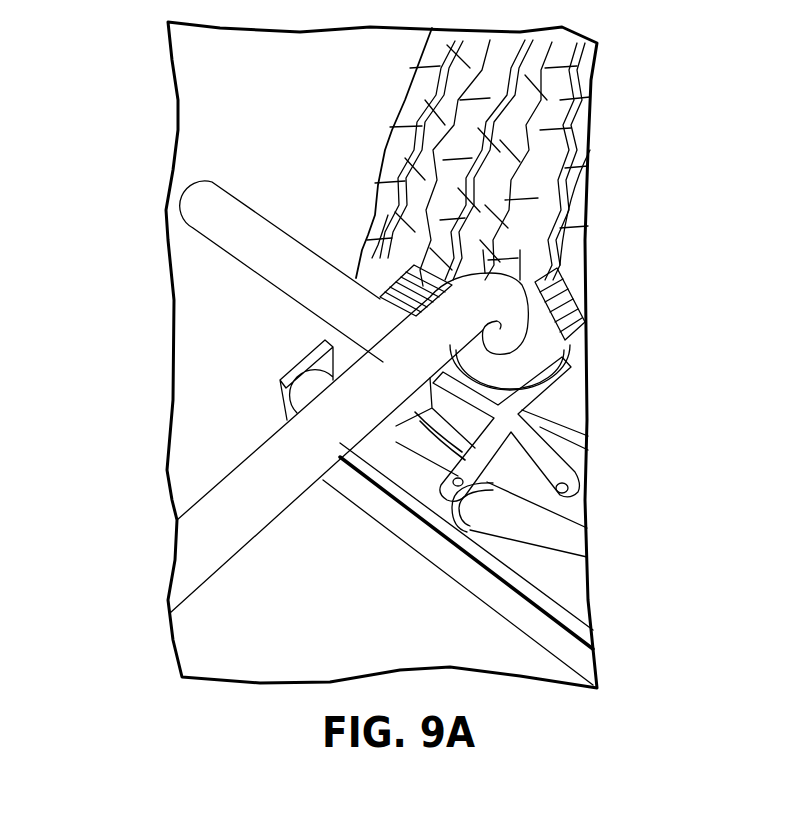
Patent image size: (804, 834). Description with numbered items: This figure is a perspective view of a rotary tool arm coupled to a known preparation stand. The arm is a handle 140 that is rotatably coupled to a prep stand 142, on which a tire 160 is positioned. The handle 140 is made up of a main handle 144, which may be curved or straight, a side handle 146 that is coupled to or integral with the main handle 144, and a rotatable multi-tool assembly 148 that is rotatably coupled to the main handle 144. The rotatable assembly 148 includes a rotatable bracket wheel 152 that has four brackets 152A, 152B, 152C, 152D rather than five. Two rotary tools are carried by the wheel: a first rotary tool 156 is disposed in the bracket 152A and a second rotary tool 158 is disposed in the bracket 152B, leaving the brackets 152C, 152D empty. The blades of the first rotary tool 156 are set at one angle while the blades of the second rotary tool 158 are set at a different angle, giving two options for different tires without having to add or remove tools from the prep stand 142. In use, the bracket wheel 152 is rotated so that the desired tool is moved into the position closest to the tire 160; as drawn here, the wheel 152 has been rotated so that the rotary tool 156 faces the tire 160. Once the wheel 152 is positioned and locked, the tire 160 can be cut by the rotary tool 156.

The handle 140 is at (210, 470).
The prep stand 142 is at (140, 302).
The main handle 144 is at (210, 553).
The side handle 146 is at (243, 217).
The rotatable multi-tool assembly 148 is at (606, 316).
The rotatable bracket wheel 152 is at (543, 350).
The first bracket 152A is at (606, 295).
The second bracket 152B is at (358, 266).
The third bracket 152C is at (433, 424).
The fourth bracket 152D is at (587, 453).
The first rotary tool 156 is at (575, 205).
The second rotary tool 158 is at (400, 185).
The tire 160 is at (572, 86).